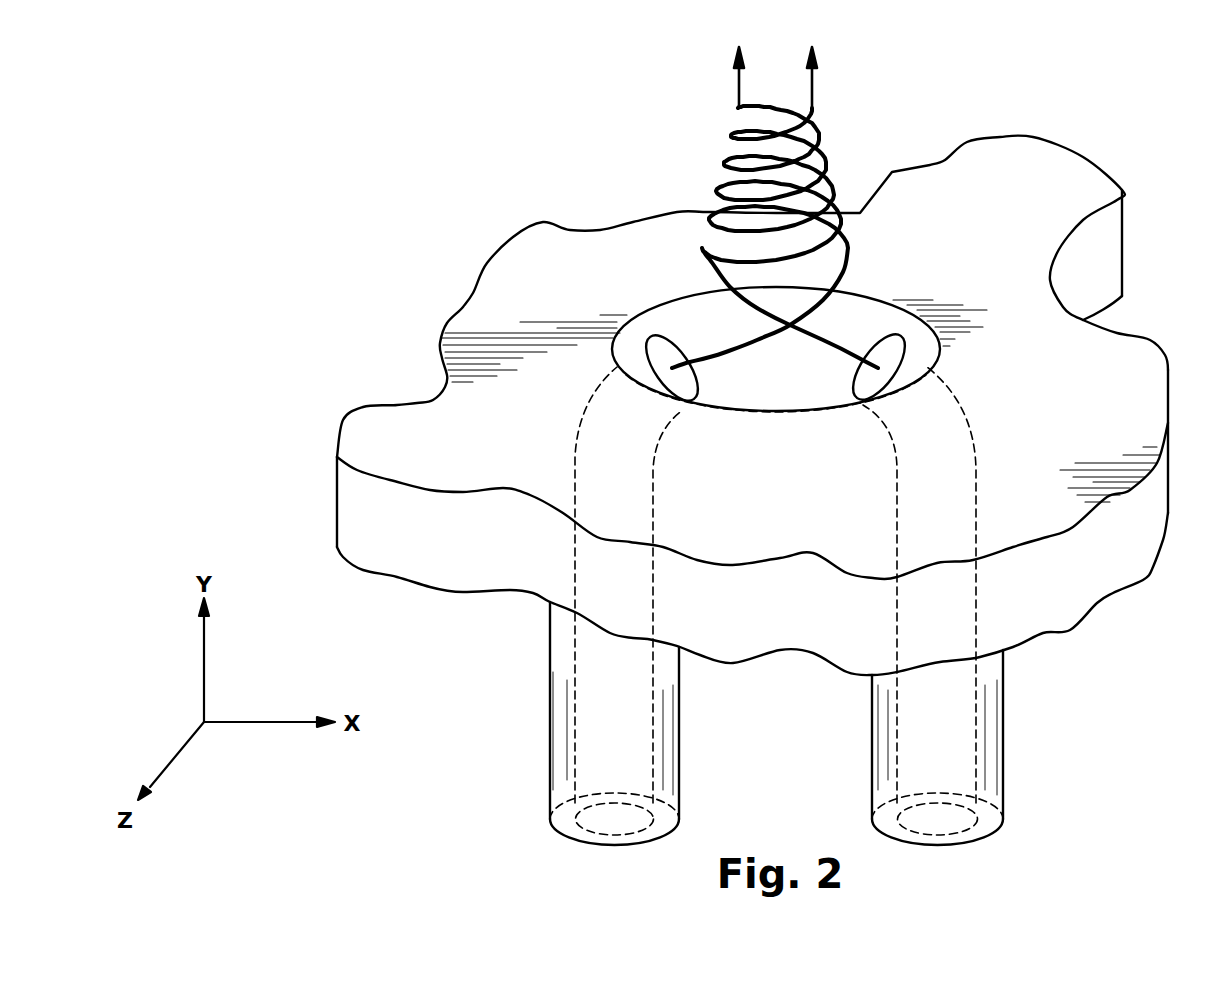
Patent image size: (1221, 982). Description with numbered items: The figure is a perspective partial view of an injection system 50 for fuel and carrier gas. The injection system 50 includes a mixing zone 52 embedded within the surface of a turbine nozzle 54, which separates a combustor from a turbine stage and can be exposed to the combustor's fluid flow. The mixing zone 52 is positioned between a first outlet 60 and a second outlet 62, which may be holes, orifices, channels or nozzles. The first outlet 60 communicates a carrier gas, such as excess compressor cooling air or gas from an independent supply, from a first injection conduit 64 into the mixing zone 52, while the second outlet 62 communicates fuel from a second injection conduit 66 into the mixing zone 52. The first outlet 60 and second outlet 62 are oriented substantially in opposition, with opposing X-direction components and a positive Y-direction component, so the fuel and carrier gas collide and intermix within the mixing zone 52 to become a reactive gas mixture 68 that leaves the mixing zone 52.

The injection system 50 is at (432, 137).
The mixing zone 52 is at (762, 399).
The turbine nozzle 54 is at (570, 237).
The first outlet 60 is at (688, 323).
The second outlet 62 is at (862, 328).
The first injection conduit 64 is at (597, 563).
The second injection conduit 66 is at (957, 617).
The reactive gas mixture 68 is at (737, 130).